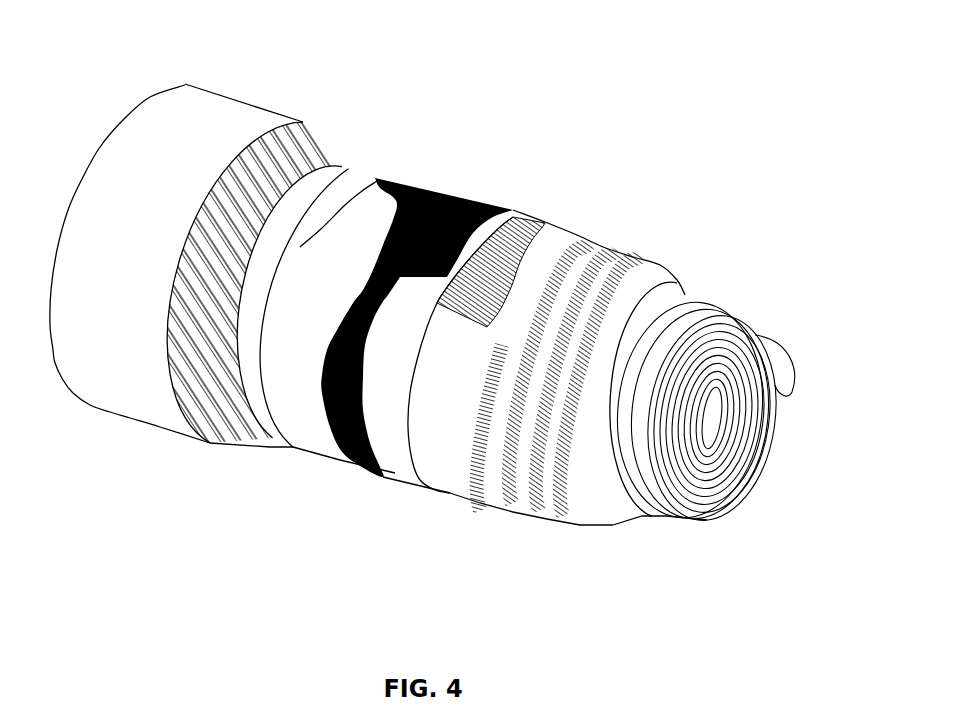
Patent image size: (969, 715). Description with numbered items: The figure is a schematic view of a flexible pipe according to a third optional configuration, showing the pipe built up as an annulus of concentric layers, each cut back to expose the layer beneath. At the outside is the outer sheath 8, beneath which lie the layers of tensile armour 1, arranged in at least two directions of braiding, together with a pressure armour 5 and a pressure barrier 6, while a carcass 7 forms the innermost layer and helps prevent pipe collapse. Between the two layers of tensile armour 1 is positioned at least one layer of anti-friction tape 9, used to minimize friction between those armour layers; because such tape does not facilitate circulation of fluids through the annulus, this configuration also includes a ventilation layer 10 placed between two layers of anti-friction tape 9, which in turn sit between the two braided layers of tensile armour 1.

The tensile armour 1 is at (228, 343).
The pressure armour 5 is at (536, 490).
The pressure barrier 6 is at (679, 292).
The carcass 7 is at (690, 513).
The outer sheath 8 is at (229, 115).
The anti-friction tape 9 is at (287, 433).
The ventilation layer 10 is at (438, 184).